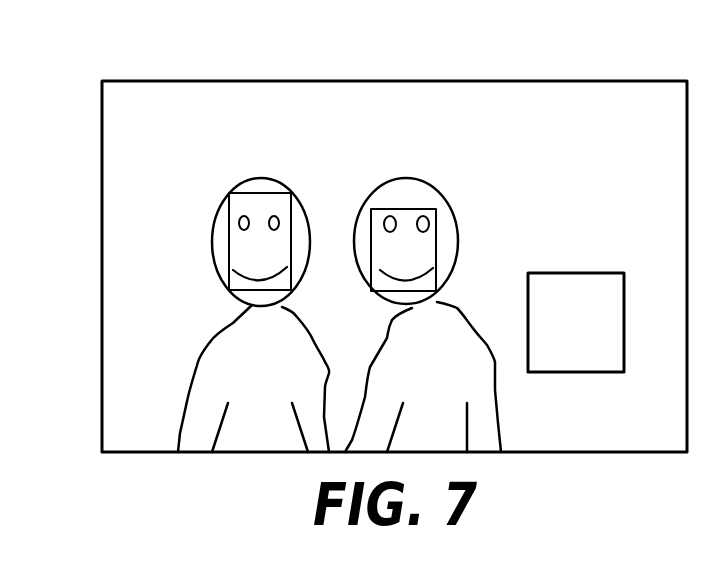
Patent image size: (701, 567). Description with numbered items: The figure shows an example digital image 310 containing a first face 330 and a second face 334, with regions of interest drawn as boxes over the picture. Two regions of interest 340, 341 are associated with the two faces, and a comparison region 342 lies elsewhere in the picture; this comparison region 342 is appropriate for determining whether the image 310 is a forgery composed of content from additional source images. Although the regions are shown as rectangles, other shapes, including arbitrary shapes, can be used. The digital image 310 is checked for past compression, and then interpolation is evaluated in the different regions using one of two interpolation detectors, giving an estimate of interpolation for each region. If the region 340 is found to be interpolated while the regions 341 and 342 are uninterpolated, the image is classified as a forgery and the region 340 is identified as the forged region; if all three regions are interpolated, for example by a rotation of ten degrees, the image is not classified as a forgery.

The digital image 310 is at (562, 81).
The first face 330 is at (250, 178).
The second face 334 is at (407, 178).
The region of interest 340 is at (229, 243).
The region of interest 341 is at (436, 247).
The comparison region 342 is at (580, 273).